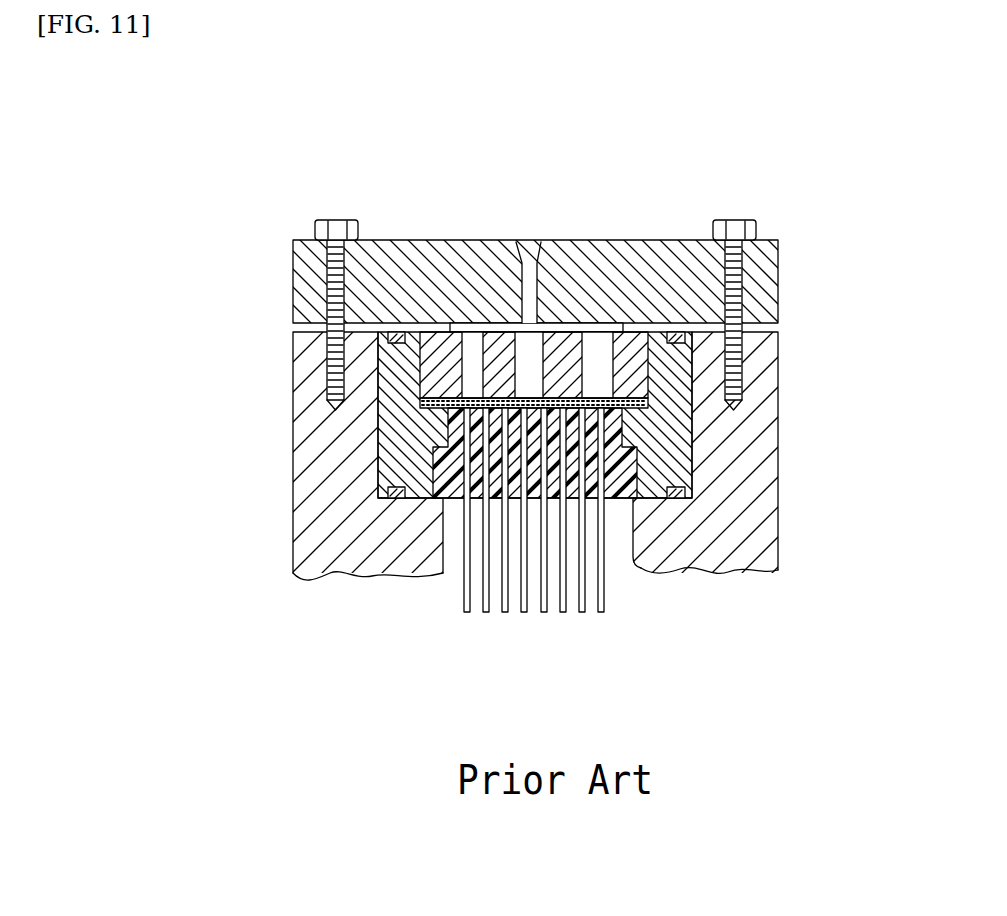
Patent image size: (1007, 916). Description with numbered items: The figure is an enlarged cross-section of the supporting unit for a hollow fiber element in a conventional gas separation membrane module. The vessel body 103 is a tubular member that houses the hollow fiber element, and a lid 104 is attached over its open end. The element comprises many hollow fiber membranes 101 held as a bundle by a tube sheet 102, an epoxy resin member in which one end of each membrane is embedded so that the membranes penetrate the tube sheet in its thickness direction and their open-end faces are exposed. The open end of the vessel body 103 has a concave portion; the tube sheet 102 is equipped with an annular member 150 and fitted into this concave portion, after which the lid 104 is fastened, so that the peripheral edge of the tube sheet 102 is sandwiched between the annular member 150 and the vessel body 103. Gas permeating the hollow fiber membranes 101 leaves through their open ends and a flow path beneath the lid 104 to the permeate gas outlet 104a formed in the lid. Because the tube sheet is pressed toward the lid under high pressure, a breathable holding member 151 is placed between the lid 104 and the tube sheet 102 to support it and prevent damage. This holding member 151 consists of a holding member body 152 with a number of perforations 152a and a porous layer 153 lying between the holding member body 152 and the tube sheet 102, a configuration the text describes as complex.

The hollow fiber membranes 101 is at (462, 584).
The tube sheet 102 is at (623, 462).
The vessel body 103 is at (323, 494).
The lid 104 is at (310, 283).
The permeate gas outlet 104a is at (529, 252).
The annular member 150 is at (396, 425).
The holding member 151 is at (558, 244).
The holding member body 152 is at (531, 273).
The perforations 152a is at (473, 353).
The porous layer 153 is at (636, 392).